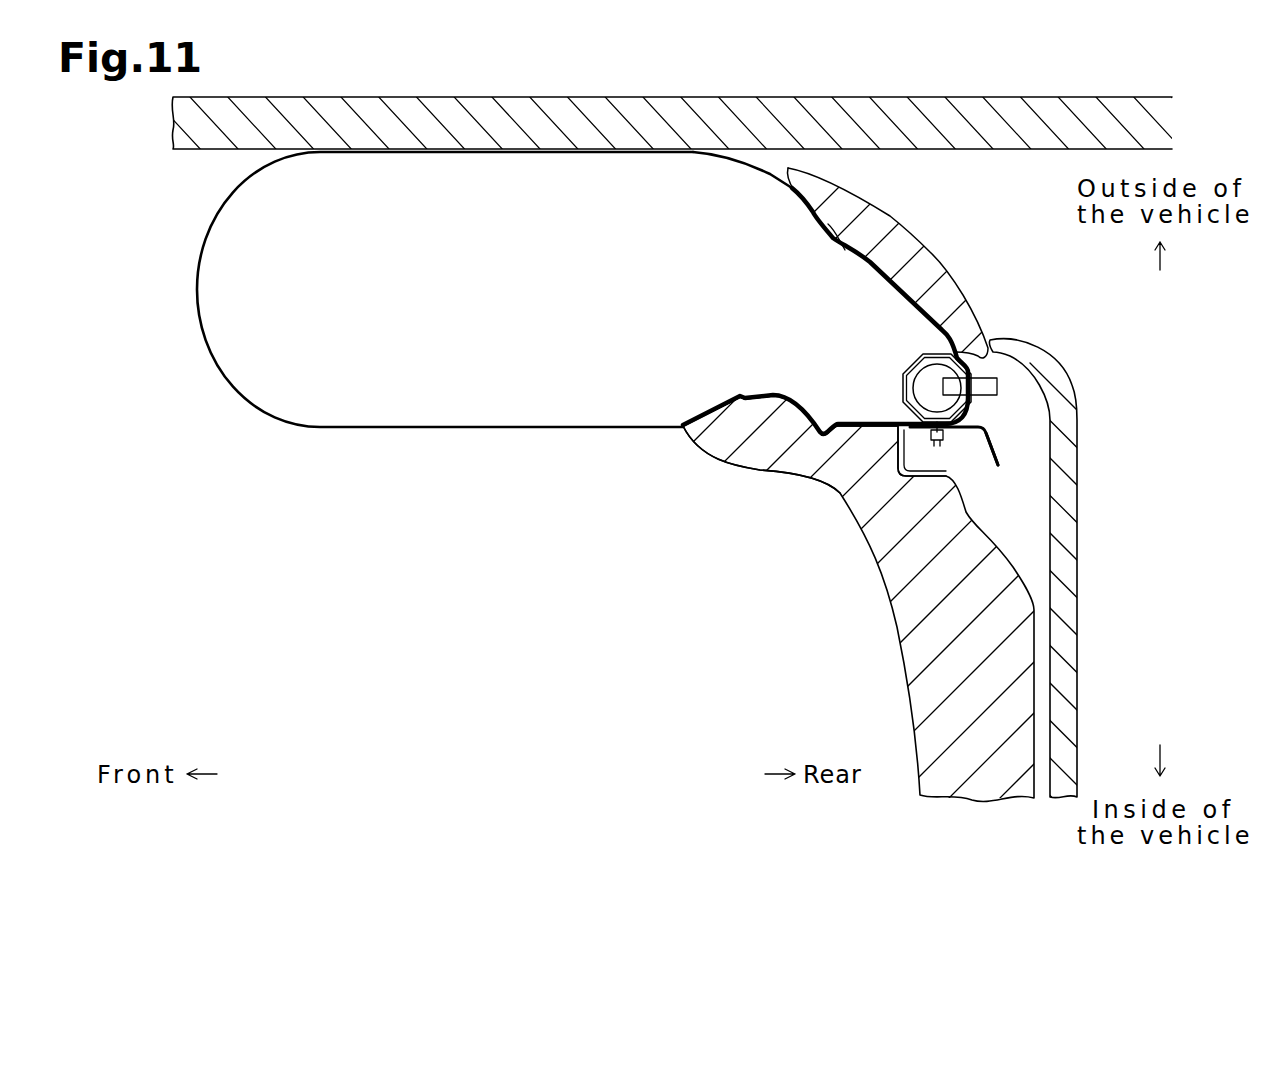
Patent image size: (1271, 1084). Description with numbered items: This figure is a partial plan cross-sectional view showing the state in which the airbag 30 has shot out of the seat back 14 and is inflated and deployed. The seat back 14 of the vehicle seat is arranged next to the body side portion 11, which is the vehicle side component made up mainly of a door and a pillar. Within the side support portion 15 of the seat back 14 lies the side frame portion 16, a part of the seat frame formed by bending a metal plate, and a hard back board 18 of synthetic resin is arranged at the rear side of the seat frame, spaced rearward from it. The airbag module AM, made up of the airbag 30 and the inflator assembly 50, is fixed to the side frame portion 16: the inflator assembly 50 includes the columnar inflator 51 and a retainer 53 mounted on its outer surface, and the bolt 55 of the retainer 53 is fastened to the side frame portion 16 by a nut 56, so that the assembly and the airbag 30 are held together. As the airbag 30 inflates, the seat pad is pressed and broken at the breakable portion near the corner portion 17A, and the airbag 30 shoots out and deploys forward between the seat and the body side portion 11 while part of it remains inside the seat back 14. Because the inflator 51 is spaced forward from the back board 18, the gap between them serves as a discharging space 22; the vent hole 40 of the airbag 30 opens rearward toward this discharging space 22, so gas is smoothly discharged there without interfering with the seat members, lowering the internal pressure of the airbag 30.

The body side portion 11 is at (1012, 142).
The seat back 14 is at (737, 595).
The side support portion 15 is at (780, 468).
The side frame portion 16 is at (998, 467).
The corner portion 17A is at (808, 176).
The back board 18 is at (1076, 608).
The discharging space 22 is at (973, 442).
The airbag 30 is at (488, 426).
The vent hole 40 is at (988, 378).
The inflator assembly 50 is at (885, 375).
The inflator 51 is at (905, 388).
The retainer 53 is at (910, 360).
The bolt 55 is at (940, 446).
The nut 56 is at (928, 434).
The airbag module AM is at (407, 466).